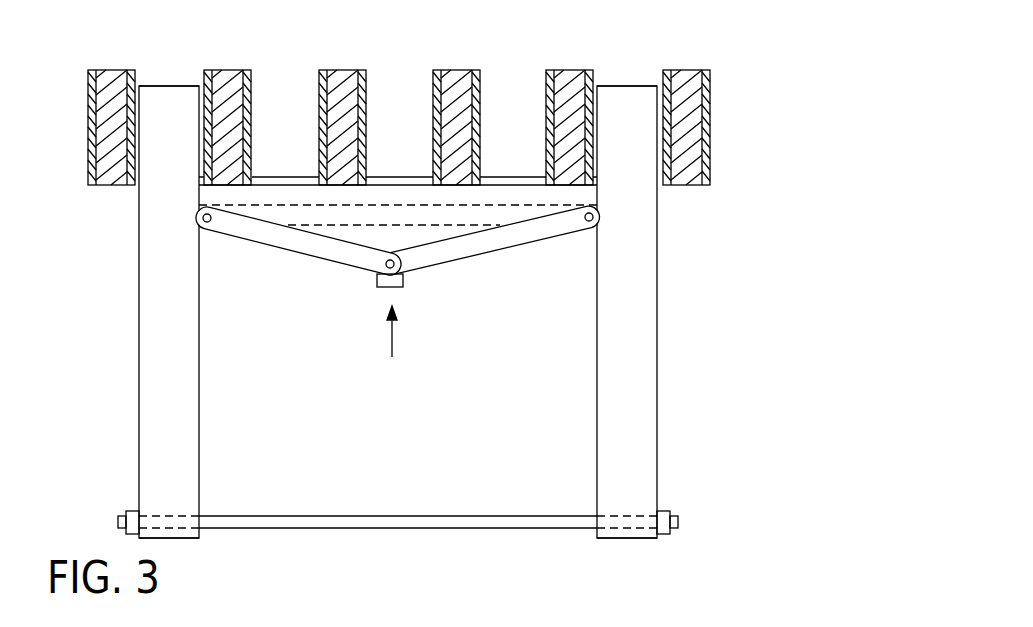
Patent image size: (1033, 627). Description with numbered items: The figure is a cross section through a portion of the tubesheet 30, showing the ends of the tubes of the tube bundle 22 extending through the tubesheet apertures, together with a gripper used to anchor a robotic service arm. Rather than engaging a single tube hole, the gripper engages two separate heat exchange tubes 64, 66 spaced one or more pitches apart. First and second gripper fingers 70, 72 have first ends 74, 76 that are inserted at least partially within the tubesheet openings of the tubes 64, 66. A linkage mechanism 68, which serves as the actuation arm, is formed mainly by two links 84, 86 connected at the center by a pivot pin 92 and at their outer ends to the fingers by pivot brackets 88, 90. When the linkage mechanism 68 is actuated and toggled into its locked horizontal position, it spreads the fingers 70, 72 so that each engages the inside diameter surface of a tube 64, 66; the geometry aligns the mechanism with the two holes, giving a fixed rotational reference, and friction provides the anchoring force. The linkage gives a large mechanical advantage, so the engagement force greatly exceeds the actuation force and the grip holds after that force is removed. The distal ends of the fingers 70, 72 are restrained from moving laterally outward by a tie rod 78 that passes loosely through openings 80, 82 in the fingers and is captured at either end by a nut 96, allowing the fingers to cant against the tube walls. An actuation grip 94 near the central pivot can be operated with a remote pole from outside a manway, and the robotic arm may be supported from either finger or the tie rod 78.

The tube bundle 22 is at (416, 67).
The tubesheet 30 is at (710, 92).
The heat exchange tube 64 is at (178, 85).
The heat exchange tube 66 is at (612, 83).
The linkage mechanism 68 is at (479, 280).
The first gripper finger 70 is at (139, 360).
The second gripper finger 72 is at (657, 358).
The first end of finger 74 is at (158, 85).
The first end of finger 76 is at (638, 85).
The tie rod 78 is at (450, 515).
The opening 80 is at (165, 538).
The opening 82 is at (617, 538).
The link 84 is at (303, 254).
The link 86 is at (504, 249).
The pivot bracket 88 is at (200, 218).
The pivot bracket 90 is at (597, 219).
The pivot pin 92 is at (400, 270).
The actuation grip 94 is at (390, 289).
The nut 96 is at (127, 512).